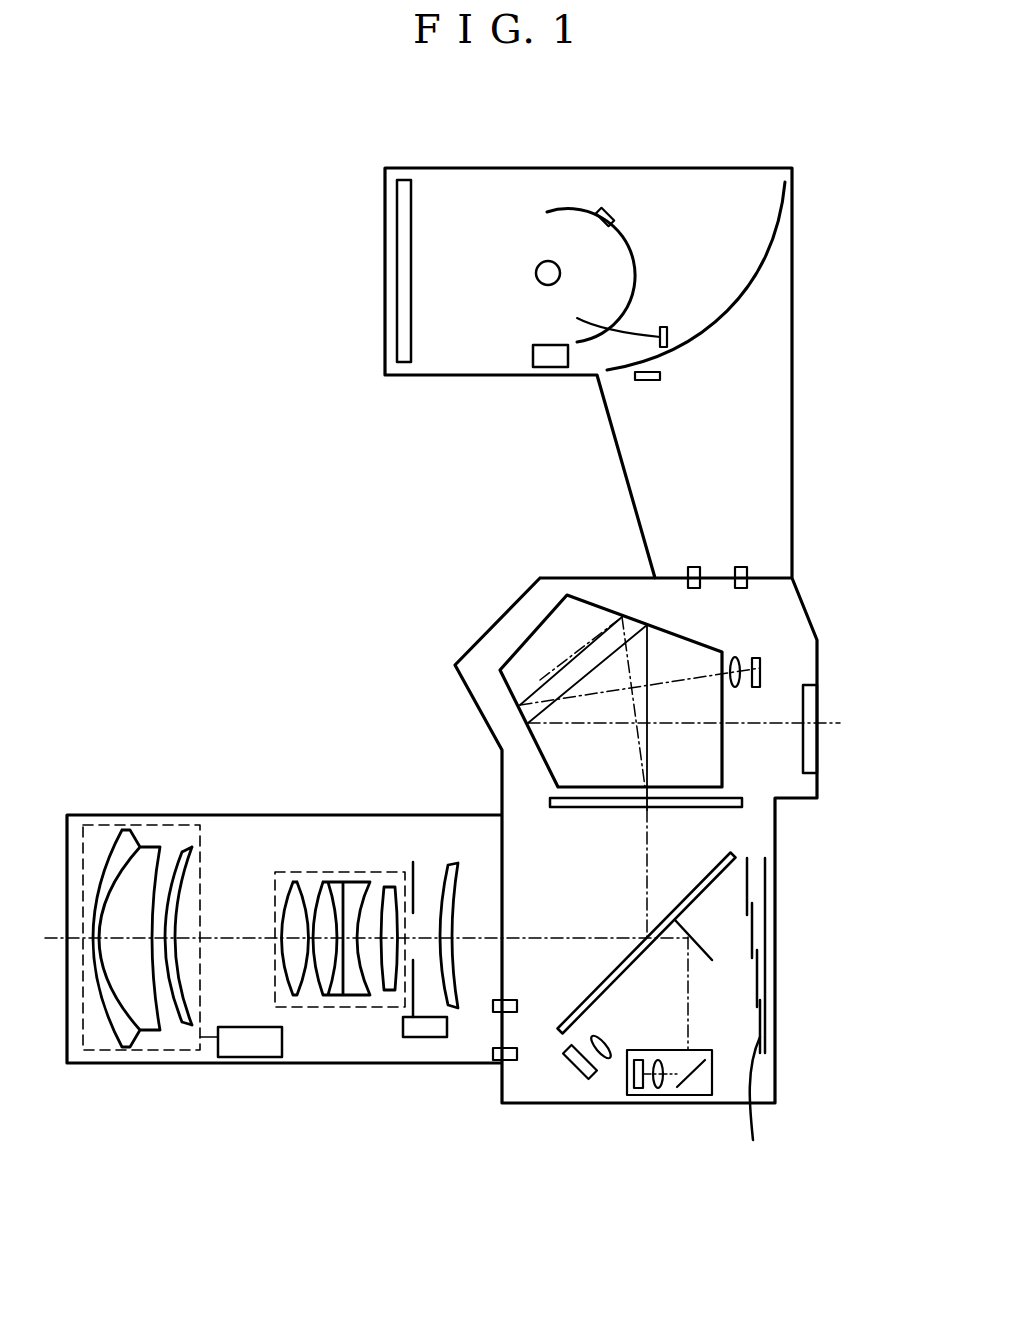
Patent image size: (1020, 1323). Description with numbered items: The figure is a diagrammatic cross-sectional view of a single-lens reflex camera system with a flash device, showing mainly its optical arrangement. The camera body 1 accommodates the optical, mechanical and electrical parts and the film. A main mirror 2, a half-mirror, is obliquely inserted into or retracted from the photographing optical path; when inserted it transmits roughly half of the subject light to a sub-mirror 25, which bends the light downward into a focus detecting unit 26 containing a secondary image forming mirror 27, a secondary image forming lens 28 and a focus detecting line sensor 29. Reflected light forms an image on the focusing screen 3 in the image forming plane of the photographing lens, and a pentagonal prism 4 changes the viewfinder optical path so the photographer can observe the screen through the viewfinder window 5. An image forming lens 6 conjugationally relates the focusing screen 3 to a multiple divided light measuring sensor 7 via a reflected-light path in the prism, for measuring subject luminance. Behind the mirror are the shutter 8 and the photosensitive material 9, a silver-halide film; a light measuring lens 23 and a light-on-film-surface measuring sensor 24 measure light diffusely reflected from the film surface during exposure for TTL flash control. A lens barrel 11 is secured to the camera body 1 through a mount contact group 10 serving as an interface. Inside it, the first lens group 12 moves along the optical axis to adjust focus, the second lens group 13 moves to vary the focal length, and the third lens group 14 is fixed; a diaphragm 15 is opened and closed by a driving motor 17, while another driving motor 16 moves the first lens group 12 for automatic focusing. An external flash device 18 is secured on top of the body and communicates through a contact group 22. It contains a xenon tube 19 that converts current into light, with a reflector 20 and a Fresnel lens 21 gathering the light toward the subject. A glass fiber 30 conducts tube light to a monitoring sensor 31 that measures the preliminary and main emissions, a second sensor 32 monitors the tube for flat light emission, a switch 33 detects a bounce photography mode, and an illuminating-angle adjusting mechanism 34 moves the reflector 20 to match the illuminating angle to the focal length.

The camera body 1 is at (478, 662).
The main mirror 2 is at (735, 851).
The focusing screen 3 is at (742, 803).
The pentagonal prism 4 is at (542, 637).
The viewfinder window 5 is at (808, 695).
The image forming lens 6 is at (738, 660).
The multiple divided light measuring sensor 7 is at (762, 660).
The shutter 8 is at (753, 1108).
The photosensitive material 9 is at (766, 1032).
The mount contact group 10 is at (517, 1004).
The lens barrel 11 is at (75, 832).
The first lens group 12 is at (178, 825).
The second lens group 13 is at (305, 870).
The third lens group 14 is at (453, 862).
The diaphragm 15 is at (400, 862).
The driving motor 16 is at (265, 1042).
The driving motor 17 is at (428, 1028).
The external flash device 18 is at (750, 217).
The xenon tube 19 is at (540, 282).
The reflector 20 is at (574, 344).
The Fresnel lens 21 is at (397, 320).
The contact group 22 is at (697, 567).
The light measuring lens 23 is at (608, 1058).
The light-on-film-surface measuring sensor 24 is at (578, 1072).
The sub-mirror 25 is at (705, 951).
The focus detecting unit 26 is at (712, 1083).
The secondary image forming mirror 27 is at (690, 1088).
The secondary image forming lens 28 is at (660, 1090).
The focus detecting line sensor 29 is at (637, 1088).
The glass fiber 30 is at (628, 328).
The monitoring sensor 31 is at (668, 340).
The sensor 32 is at (601, 212).
The switch 33 is at (645, 381).
The illuminating-angle adjusting mechanism 34 is at (541, 356).